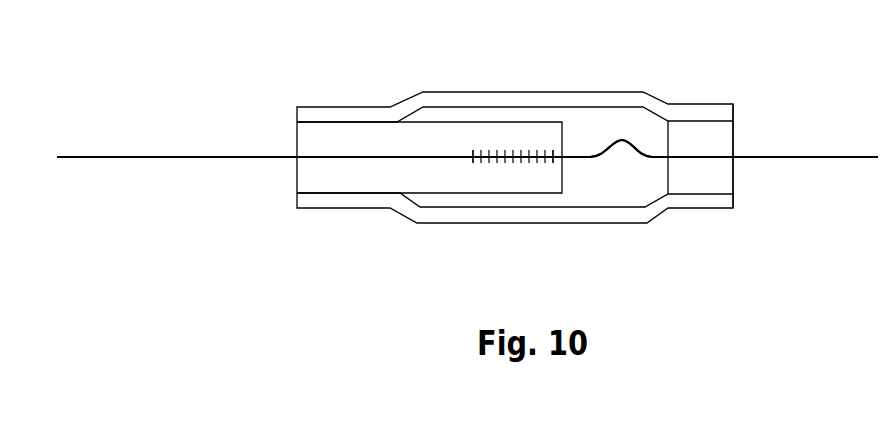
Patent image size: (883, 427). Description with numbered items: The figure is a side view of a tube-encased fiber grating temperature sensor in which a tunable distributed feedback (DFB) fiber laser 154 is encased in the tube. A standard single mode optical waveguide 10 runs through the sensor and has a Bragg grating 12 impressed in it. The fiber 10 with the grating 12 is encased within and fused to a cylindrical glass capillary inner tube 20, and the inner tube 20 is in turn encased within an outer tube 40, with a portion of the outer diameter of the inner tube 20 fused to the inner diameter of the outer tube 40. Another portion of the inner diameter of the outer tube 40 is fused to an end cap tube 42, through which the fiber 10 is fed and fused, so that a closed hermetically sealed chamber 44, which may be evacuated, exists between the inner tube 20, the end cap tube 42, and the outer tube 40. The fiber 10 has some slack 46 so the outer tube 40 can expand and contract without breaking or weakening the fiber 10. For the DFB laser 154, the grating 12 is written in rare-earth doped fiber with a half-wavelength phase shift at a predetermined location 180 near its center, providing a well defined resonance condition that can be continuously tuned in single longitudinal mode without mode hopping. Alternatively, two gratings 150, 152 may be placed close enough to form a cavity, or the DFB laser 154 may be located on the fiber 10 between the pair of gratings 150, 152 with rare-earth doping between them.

The optical waveguide 10 is at (173, 157).
The Bragg grating 12 is at (477, 153).
The predetermined location 180 is at (521, 152).
The inner tube 20 is at (403, 150).
The outer tube 40 is at (571, 98).
The end cap tube 42 is at (703, 140).
The chamber 44 is at (628, 190).
The slack 46 is at (636, 143).
The grating 150 is at (497, 162).
The grating 152 is at (532, 162).
The tunable distributed feedback fiber laser 154 is at (471, 164).